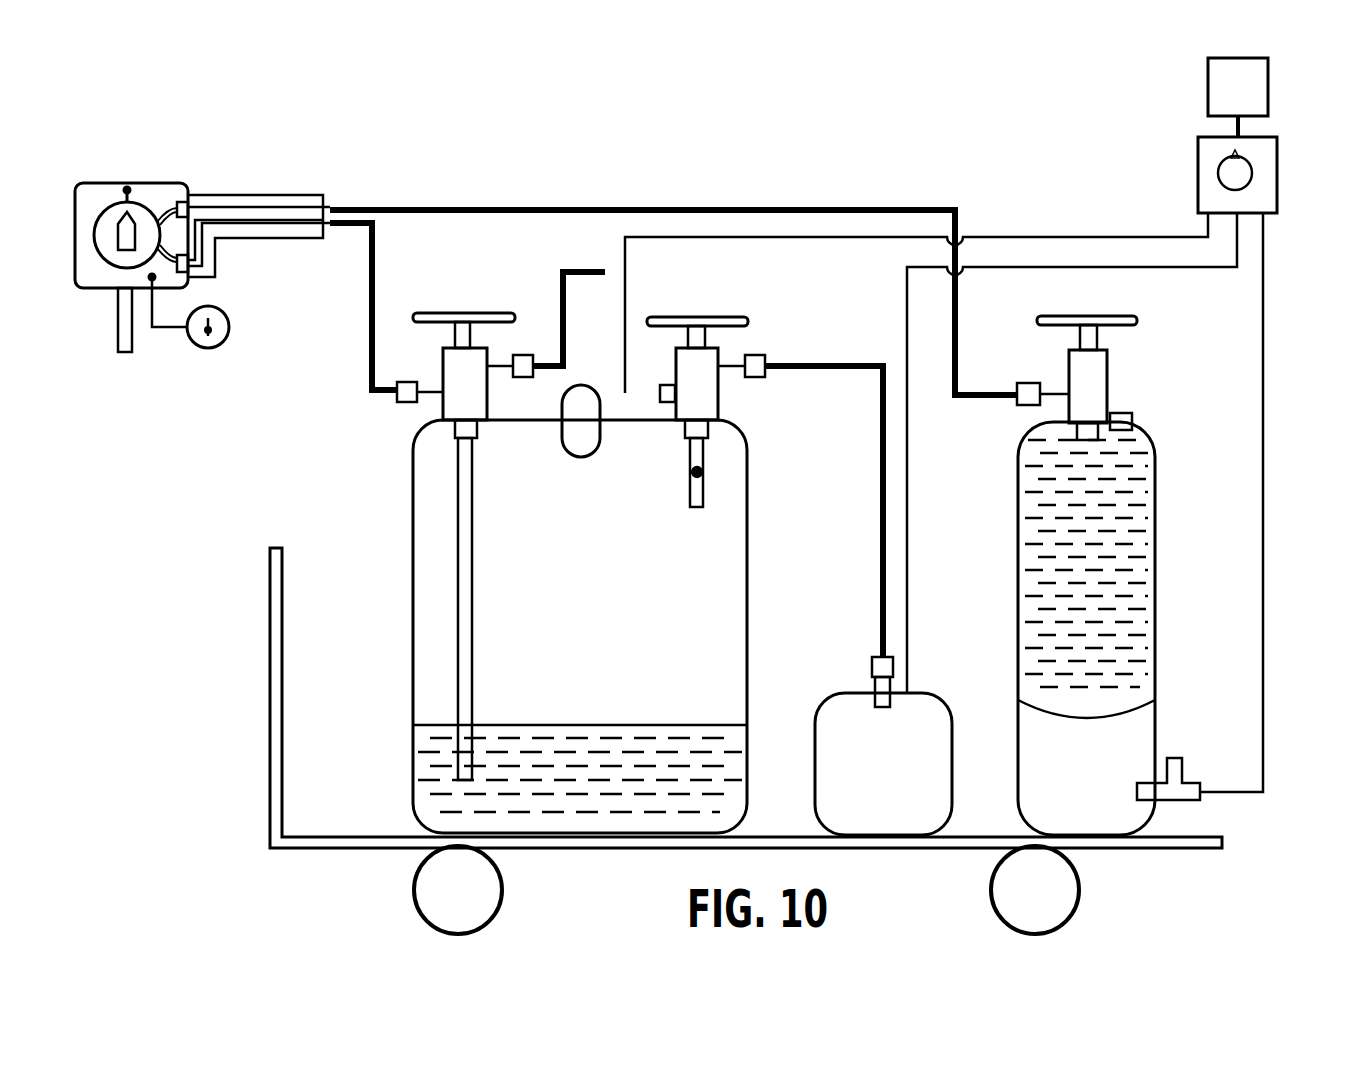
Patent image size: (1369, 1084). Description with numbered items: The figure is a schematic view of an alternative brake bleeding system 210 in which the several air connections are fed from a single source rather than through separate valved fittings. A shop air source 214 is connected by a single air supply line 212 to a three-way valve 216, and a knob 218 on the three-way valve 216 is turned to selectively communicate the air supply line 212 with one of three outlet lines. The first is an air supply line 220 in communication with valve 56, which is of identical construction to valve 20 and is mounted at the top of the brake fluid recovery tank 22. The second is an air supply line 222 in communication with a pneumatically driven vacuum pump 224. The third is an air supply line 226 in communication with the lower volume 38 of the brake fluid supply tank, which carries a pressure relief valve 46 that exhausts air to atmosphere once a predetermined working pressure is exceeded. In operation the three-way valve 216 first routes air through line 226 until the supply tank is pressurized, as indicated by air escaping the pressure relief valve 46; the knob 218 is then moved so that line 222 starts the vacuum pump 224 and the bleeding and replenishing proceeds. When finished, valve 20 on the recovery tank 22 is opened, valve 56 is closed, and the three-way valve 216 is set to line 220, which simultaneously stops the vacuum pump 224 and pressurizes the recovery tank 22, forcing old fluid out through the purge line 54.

The brake bleeding system 210 is at (1062, 124).
The shop air source 214 is at (1222, 102).
The air supply line 212 is at (1243, 124).
The three-way valve 216 is at (1267, 196).
The knob 218 is at (1242, 172).
The air supply line 220 is at (1147, 235).
The air supply line 222 is at (1155, 268).
The air supply line 226 is at (1265, 292).
The valve 20 is at (450, 392).
The purge line 54 is at (585, 270).
The valve 56 is at (682, 392).
The brake fluid recovery tank 22 is at (560, 603).
The vacuum pump 224 is at (860, 778).
The lower volume 38 is at (1070, 778).
The pressure relief valve 46 is at (1175, 758).